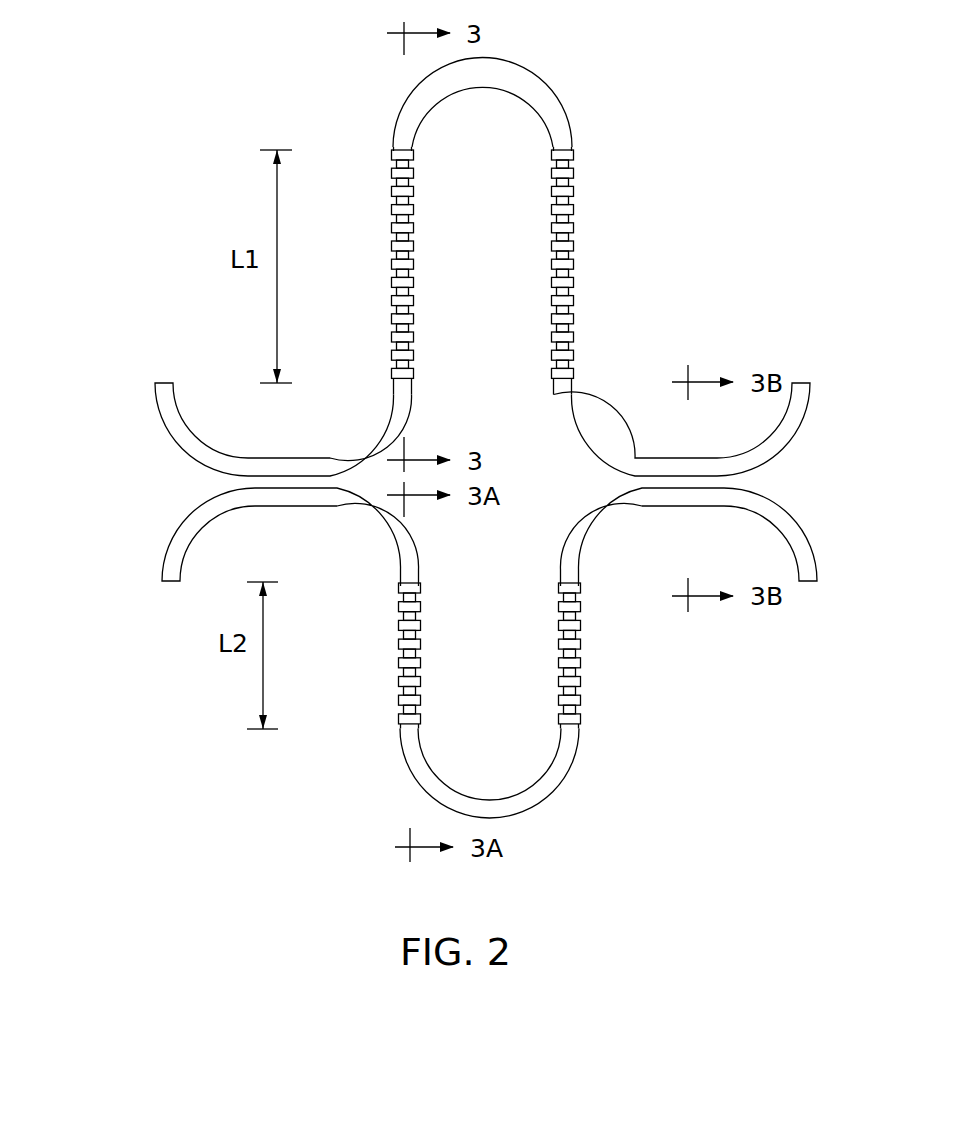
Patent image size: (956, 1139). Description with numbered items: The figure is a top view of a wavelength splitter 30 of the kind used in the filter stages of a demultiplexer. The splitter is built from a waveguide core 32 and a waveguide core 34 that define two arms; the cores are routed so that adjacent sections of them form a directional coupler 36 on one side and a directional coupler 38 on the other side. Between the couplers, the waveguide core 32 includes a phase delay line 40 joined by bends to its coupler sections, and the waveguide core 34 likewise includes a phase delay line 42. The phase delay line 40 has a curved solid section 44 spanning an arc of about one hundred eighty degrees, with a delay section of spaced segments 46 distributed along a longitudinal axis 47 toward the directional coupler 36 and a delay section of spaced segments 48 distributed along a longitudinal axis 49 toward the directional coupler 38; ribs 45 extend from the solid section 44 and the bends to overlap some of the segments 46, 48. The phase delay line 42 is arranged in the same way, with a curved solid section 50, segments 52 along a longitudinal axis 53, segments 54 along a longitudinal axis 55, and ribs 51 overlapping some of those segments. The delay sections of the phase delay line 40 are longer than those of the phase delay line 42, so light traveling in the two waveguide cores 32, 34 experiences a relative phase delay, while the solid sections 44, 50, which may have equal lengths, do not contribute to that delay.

The wavelength splitter 30 is at (148, 60).
The waveguide core 32 is at (170, 417).
The waveguide core 34 is at (183, 541).
The directional coupler 36 is at (272, 430).
The directional coupler 38 is at (678, 442).
The phase delay line 40 is at (358, 127).
The phase delay line 42 is at (362, 772).
The solid section 44 is at (432, 88).
The ribs 45 is at (398, 368).
The segments 46 is at (397, 233).
The longitudinal axis 47 is at (410, 321).
The segments 48 is at (570, 230).
The longitudinal axis 49 is at (555, 283).
The solid section 50 is at (555, 777).
The ribs 51 is at (401, 597).
The segments 52 is at (403, 684).
The longitudinal axis 53 is at (414, 634).
The segments 54 is at (572, 632).
The longitudinal axis 55 is at (565, 667).